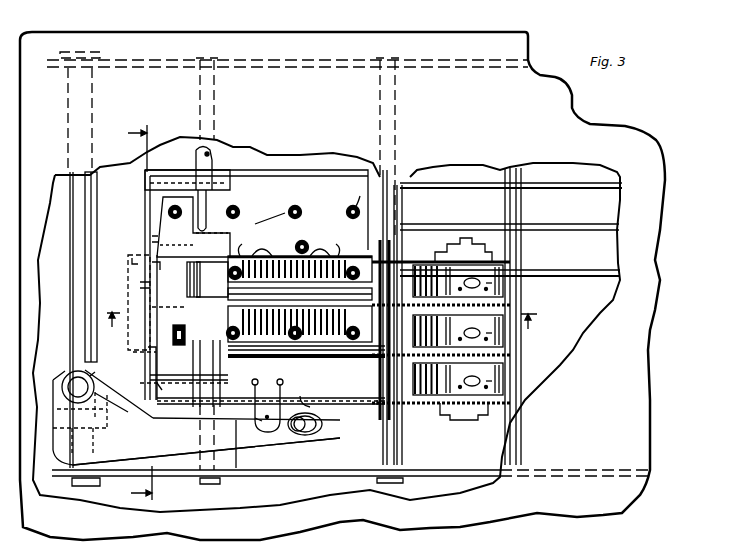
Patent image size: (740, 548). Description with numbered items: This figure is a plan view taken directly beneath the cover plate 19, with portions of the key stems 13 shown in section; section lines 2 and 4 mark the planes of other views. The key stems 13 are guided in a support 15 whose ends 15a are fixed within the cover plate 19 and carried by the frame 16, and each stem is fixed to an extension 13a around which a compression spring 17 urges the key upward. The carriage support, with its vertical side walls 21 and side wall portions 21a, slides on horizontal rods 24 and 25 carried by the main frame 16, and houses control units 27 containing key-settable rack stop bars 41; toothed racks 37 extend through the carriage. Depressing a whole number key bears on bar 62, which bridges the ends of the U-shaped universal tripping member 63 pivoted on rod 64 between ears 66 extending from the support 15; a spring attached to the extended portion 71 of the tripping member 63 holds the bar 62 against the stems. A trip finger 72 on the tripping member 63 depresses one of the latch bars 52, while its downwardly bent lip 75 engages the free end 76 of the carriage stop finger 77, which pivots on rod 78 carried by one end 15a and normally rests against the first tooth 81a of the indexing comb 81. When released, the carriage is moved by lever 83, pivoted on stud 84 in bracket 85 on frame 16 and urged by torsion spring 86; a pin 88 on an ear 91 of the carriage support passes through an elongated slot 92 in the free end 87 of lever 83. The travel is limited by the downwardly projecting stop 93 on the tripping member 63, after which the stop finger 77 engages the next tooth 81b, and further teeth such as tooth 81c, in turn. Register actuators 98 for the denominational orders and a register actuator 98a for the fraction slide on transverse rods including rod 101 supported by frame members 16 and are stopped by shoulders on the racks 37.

The cover plate 19 is at (456, 46).
The rod 24 is at (200, 103).
The rod 25 is at (380, 100).
The section line 2 is at (133, 314).
The section line 4 is at (295, 383).
The support 15 is at (288, 182).
The end of support 15a is at (247, 170).
The rod 78 is at (186, 168).
The vertical side wall 21 is at (152, 410).
The stem extension 13a is at (240, 210).
The compression spring 17 is at (145, 322).
The actuating stem 13 is at (300, 258).
The rack stop bar 41 is at (300, 309).
The bar 62 is at (348, 255).
The universal tripping member 63 is at (362, 362).
The carriage stop finger 77 is at (155, 238).
The indexing comb 81 is at (128, 270).
The free end of stop finger 76 is at (150, 283).
The first tooth 81a is at (150, 302).
The downwardly bent lip 75 is at (142, 273).
The trip finger 72 is at (193, 265).
The latch bar 52 is at (196, 290).
The stop 93 is at (152, 335).
The next tooth 81b is at (148, 348).
The ear 66 is at (158, 383).
The stud 84 is at (62, 378).
The bracket 85 is at (53, 442).
The torsion spring 86 is at (57, 409).
The lever arm 81c is at (119, 405).
The rod 64 is at (267, 400).
The extended portion 71 is at (255, 425).
The ear 91 is at (206, 451).
The pin 88 is at (298, 431).
The free end of lever 87 is at (318, 432).
The elongated slot 92 is at (325, 430).
The main frame 16 is at (300, 472).
The lever 83 is at (240, 468).
The mounting bracket 21a is at (467, 257).
The toothed rack 37 is at (425, 262).
The circuit breaker unit 27 is at (503, 270).
The transverse rod 101 is at (517, 210).
The register actuator 98 is at (597, 182).
The register actuator 98a is at (607, 277).